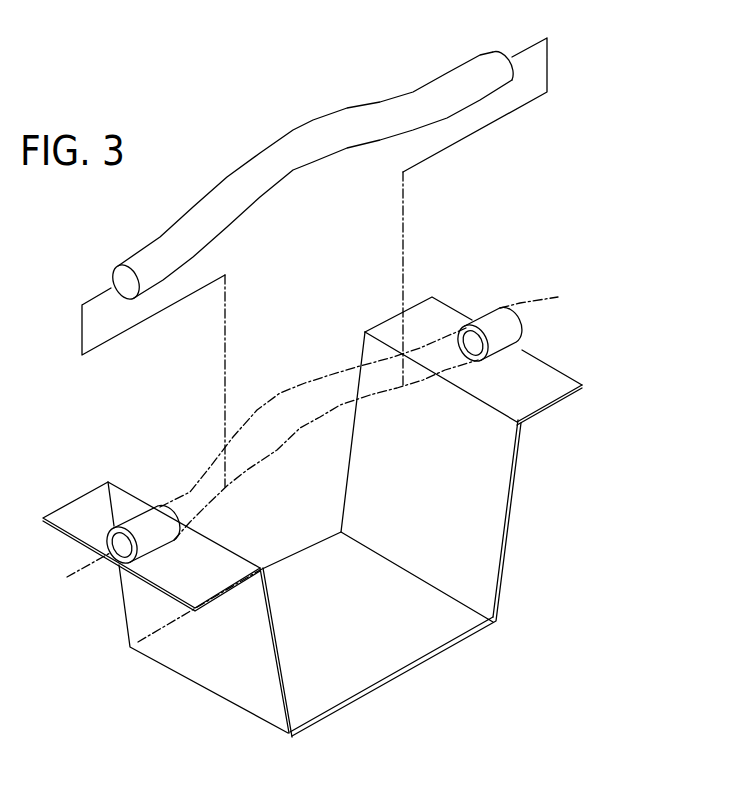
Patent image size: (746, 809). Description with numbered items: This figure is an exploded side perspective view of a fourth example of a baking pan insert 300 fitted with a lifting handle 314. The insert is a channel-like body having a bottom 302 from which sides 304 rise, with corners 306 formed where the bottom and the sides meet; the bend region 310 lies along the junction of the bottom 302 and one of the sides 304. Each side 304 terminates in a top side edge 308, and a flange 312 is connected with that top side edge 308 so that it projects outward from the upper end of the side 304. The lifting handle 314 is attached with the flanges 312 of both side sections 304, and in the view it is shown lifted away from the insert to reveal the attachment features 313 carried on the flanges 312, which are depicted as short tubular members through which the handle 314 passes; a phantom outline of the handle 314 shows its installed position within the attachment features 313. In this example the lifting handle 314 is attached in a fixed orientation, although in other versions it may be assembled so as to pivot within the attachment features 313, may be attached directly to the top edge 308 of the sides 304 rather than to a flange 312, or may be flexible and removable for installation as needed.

The baking pan insert 300 is at (590, 247).
The bottom 302 is at (364, 677).
The sides 304 is at (480, 470).
The corners 306 is at (295, 737).
The top side edge 308 is at (483, 400).
The bend 310 is at (460, 642).
The flange 312 is at (517, 365).
The attachment features 313 is at (137, 520).
The lifting handle 314 is at (280, 137).